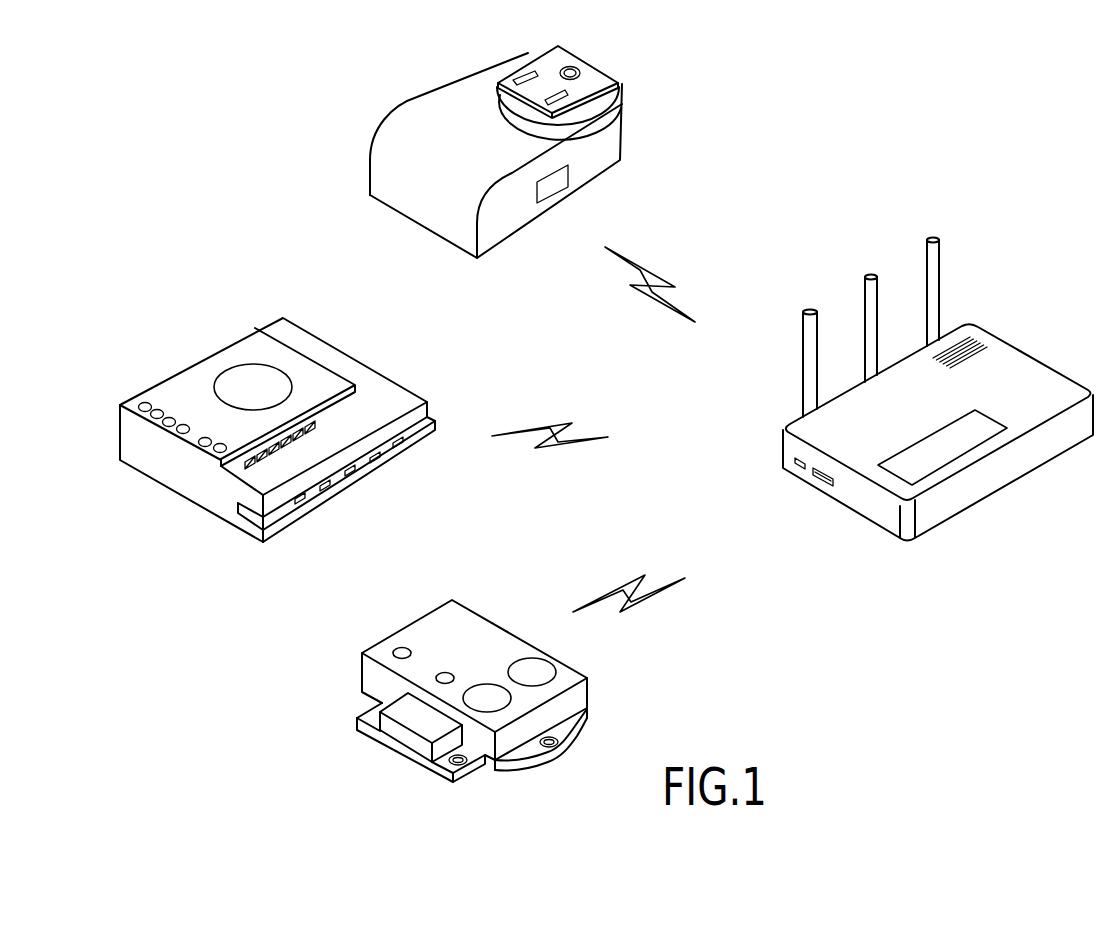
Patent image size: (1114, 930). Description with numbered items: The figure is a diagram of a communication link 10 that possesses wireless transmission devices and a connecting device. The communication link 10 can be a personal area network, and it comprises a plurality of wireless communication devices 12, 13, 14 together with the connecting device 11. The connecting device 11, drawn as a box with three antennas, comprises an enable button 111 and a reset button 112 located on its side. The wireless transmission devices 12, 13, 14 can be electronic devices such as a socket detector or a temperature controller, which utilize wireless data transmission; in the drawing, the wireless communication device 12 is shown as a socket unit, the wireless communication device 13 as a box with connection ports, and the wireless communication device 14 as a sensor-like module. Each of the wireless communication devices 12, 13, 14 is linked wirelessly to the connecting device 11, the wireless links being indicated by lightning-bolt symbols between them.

The communication link 10 is at (1096, 74).
The connecting device 11 is at (1017, 367).
The enable button 111 is at (792, 471).
The reset button 112 is at (822, 478).
The wireless communication device 12 is at (443, 110).
The wireless communication device 13 is at (245, 347).
The wireless communication device 14 is at (405, 635).